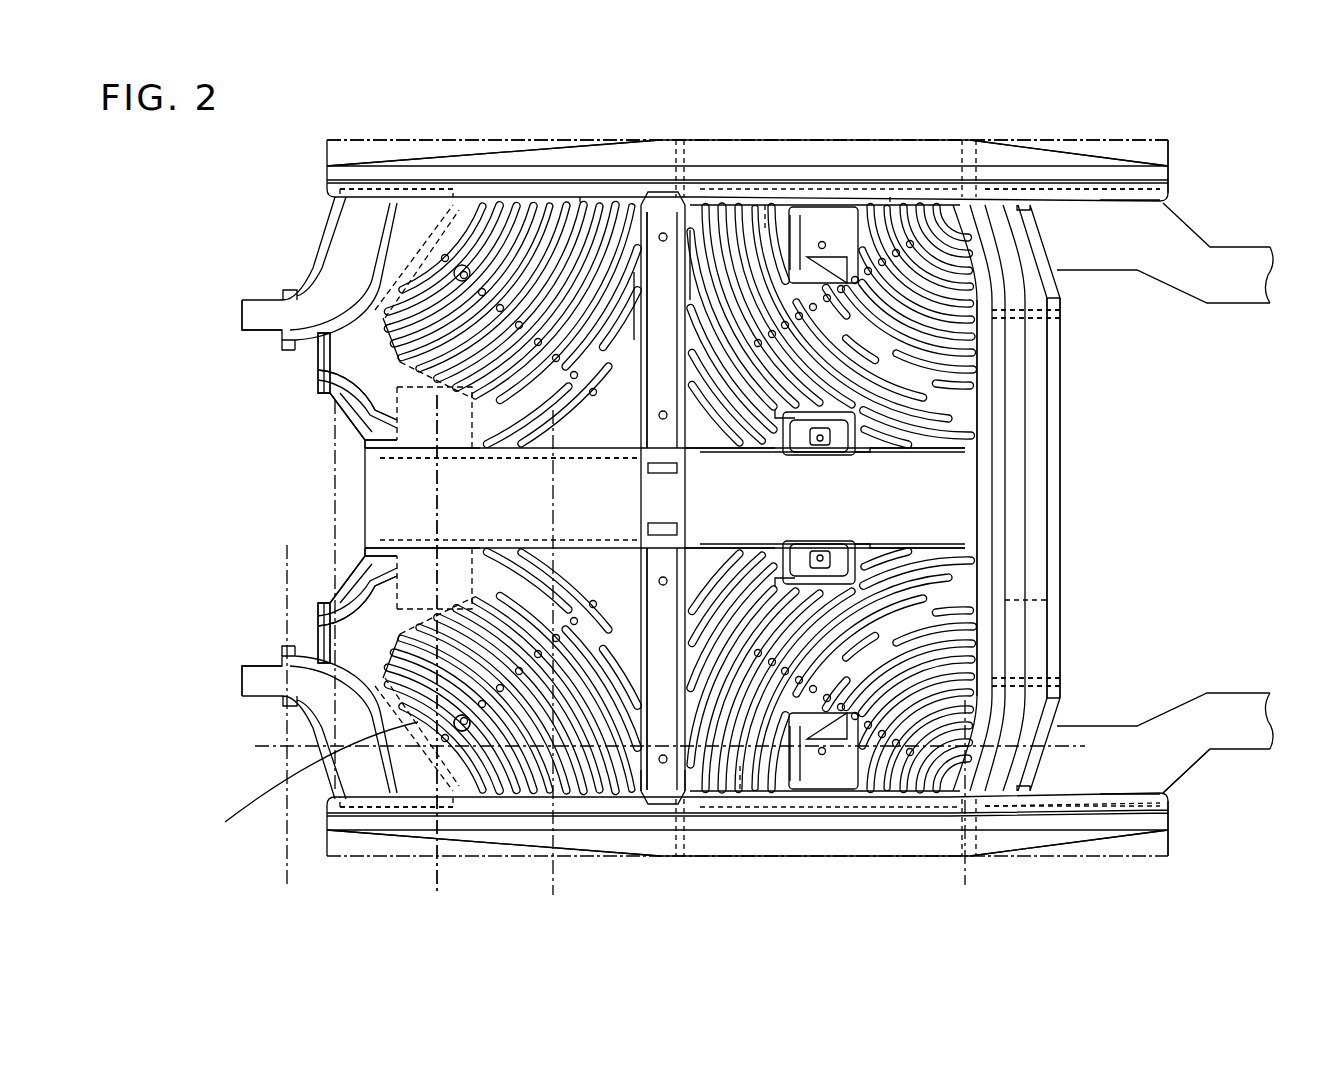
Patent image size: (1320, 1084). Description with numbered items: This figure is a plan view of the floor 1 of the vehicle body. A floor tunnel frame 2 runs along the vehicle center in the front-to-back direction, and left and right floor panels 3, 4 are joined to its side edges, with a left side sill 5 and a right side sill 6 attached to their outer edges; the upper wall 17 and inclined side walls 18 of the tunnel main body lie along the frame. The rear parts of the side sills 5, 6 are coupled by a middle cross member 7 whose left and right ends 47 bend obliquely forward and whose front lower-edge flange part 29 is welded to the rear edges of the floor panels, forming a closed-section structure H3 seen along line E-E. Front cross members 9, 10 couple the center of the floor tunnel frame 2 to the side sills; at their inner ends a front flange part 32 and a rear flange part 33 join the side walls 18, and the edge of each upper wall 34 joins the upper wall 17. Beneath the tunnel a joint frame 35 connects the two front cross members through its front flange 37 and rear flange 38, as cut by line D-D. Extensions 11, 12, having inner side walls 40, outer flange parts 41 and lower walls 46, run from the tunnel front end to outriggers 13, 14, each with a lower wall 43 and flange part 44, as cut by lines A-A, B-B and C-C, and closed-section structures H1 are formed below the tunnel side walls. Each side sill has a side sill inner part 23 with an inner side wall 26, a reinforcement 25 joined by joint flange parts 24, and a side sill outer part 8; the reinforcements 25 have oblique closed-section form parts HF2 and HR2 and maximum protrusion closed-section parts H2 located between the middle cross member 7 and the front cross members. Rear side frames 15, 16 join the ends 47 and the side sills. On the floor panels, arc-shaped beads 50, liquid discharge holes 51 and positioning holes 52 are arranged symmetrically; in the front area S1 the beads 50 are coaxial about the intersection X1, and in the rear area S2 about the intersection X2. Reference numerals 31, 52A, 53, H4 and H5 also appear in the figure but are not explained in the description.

The floor 1 is at (921, 130).
The floor tunnel frame 2 is at (967, 485).
The floor panel 3 is at (770, 772).
The floor panel 4 is at (785, 205).
The left side sill 5 is at (840, 860).
The right side sill 6 is at (730, 140).
The middle cross member 7 is at (1062, 520).
The side sill outer part 8 is at (1120, 160).
The front cross member 9 is at (665, 810).
The front cross member 10 is at (662, 185).
The extension 11 is at (300, 625).
The extension 12 is at (340, 410).
The outrigger 13 is at (245, 690).
The outrigger 14 is at (245, 316).
The rear side frame 15 is at (1235, 690).
The rear side frame 16 is at (1240, 305).
The upper wall 17 is at (760, 495).
The inclined side wall 18 is at (760, 515).
The side sill inner part 23 is at (1170, 200).
The joint flange part 24 is at (1150, 197).
The reinforcement 25 is at (1170, 166).
The inner side wall 26 is at (1170, 790).
The front lower-edge flange part 29 is at (982, 380).
The fin bank edge 31 is at (603, 215).
The front flange part 32 is at (648, 467).
The rear flange part 33 is at (700, 455).
The upper wall 34 is at (647, 240).
The joint frame 35 is at (680, 500).
The front flange 37 is at (655, 512).
The rear flange 38 is at (842, 455).
The inner side wall 40 is at (372, 442).
The outer flange part 41 is at (322, 362).
The lower wall 43 is at (352, 262).
The flange part 44 is at (283, 346).
The lower wall 46 is at (360, 398).
The end of middle cross member 47 is at (1000, 240).
The bead 50 is at (515, 225).
The liquid discharge hole 51 is at (476, 232).
The positioning hole 52 is at (458, 225).
The large hole 52A is at (462, 732).
The fin root 53 is at (580, 200).
The line A- A is at (332, 570).
The line B- B is at (342, 518).
The line C- C is at (480, 397).
The line D- D is at (592, 423).
The line E- E is at (258, 748).
The closed-section structure H1 is at (992, 428).
The maximum protrusion closed-section part H2 is at (840, 160).
The closed-section structure H3 is at (1035, 605).
The hidden line H4 is at (765, 200).
The hidden line H5 is at (655, 492).
The oblique closed-section form part HF2 is at (560, 160).
The oblique closed-section form part HR2 is at (1070, 160).
The front area S1 is at (256, 800).
The rear area S2 is at (1042, 578).
The intersection X1 is at (435, 835).
The intersection X2 is at (966, 830).